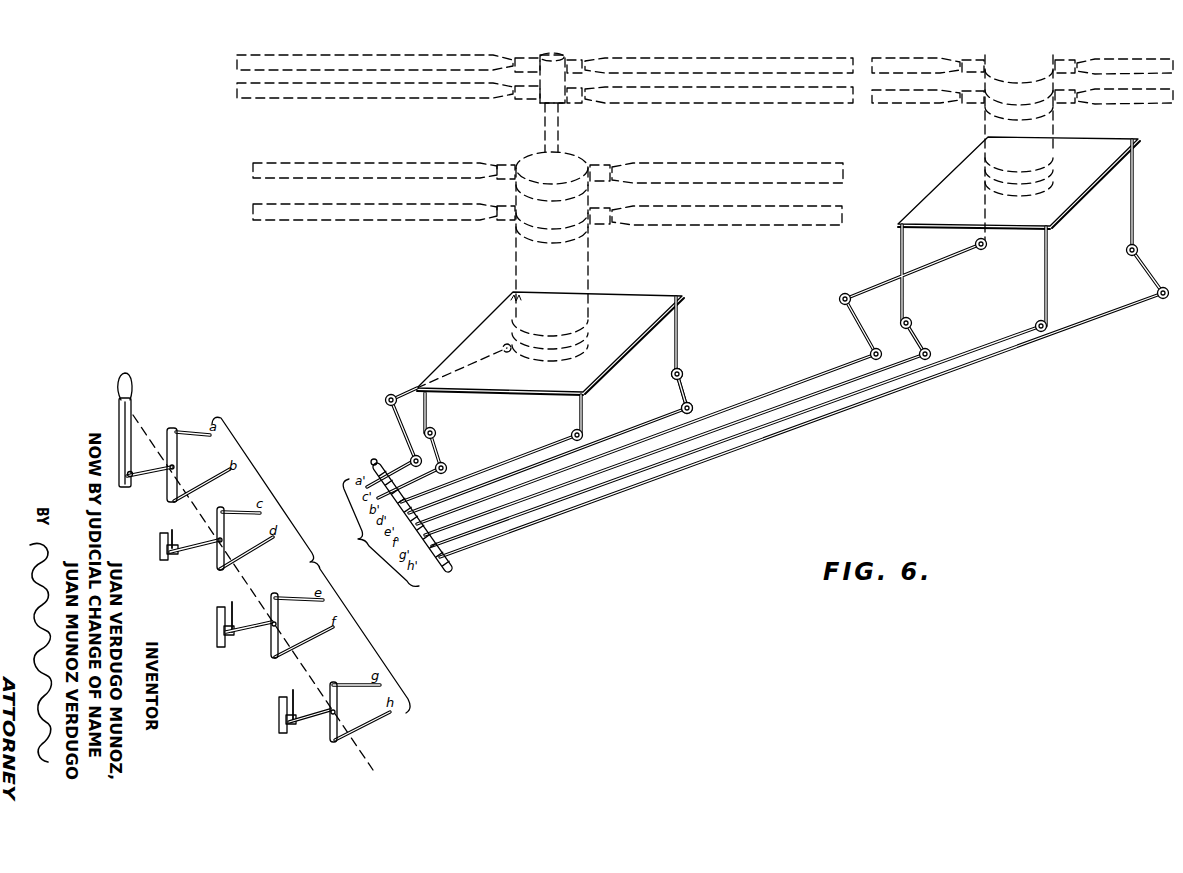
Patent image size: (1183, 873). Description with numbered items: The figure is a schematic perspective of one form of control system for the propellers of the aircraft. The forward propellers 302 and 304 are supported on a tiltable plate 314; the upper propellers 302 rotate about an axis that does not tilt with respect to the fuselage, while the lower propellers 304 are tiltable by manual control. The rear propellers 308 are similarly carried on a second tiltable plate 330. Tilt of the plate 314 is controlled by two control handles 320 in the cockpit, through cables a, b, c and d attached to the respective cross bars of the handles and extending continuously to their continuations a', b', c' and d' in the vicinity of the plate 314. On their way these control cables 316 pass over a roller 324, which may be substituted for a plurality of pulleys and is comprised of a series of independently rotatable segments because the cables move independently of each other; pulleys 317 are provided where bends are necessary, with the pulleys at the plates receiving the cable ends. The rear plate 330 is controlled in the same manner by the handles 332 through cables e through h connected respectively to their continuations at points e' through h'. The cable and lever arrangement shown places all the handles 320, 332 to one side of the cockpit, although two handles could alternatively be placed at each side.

The forward propellers 302 is at (225, 82).
The lower forward propellers 304 is at (235, 190).
The rear propellers 308 is at (928, 110).
The tiltable plate 314 is at (648, 270).
The control cables 316 is at (738, 449).
The pulley arm linkage 317 is at (694, 402).
The control handles 320 is at (152, 357).
The roller 324 is at (451, 571).
The tiltable plate 330 is at (1117, 145).
The handles 332 is at (222, 607).